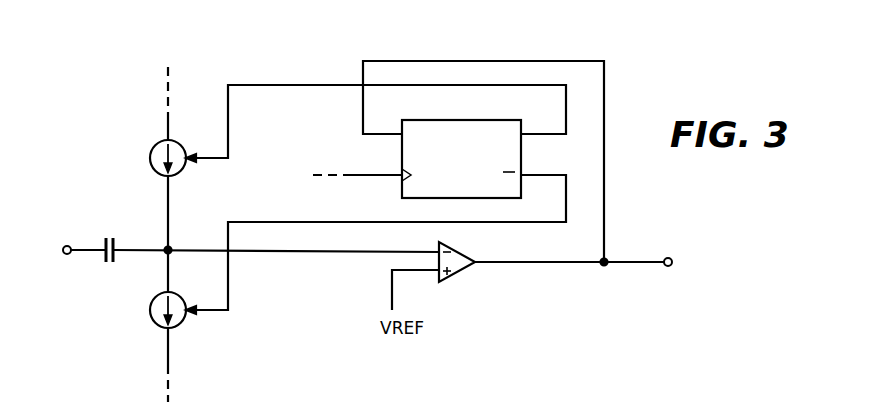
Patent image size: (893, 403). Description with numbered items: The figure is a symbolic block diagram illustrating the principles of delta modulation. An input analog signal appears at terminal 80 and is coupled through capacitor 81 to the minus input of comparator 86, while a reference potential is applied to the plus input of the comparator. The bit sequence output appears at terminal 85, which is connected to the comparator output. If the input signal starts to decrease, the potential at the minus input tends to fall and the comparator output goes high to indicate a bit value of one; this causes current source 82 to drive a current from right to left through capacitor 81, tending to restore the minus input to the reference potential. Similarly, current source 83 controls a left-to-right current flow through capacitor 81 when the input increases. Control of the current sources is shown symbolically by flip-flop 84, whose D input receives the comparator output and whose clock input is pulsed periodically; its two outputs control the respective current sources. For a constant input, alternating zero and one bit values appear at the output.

The terminal 80 is at (67, 256).
The capacitor 81 is at (111, 237).
The current source 82 is at (151, 149).
The current source 83 is at (149, 308).
The flip-flop 84 is at (508, 119).
The terminal 85 is at (671, 257).
The comparator 86 is at (458, 279).